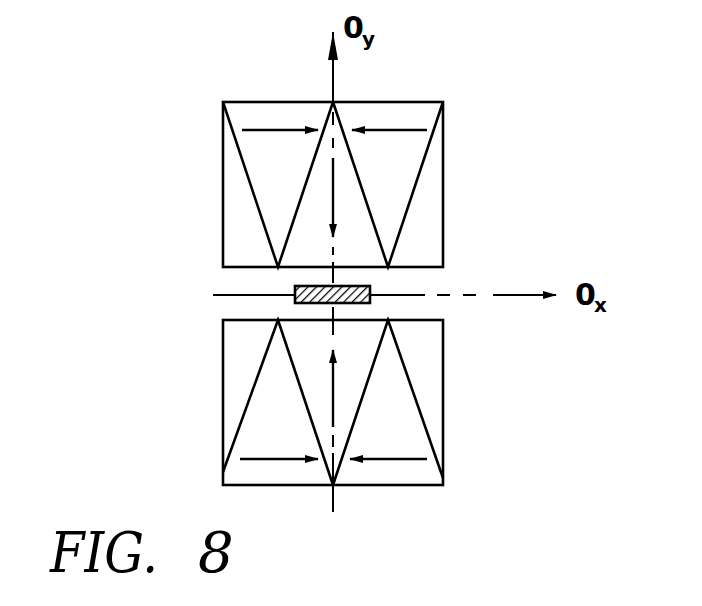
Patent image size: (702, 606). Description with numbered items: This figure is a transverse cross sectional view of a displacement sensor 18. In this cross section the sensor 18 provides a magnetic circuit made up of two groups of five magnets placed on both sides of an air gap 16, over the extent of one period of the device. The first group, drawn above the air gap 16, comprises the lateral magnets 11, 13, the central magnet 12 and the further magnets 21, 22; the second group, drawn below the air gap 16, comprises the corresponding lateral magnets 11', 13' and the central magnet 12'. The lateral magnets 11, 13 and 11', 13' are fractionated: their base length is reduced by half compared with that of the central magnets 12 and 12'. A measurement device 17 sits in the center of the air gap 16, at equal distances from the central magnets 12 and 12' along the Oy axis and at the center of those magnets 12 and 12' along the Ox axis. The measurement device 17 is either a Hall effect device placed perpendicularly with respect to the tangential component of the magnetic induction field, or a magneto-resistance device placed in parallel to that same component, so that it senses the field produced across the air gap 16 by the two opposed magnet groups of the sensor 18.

The sensor 18 is at (133, 127).
The fractionated lateral magnet 11 is at (235, 184).
The central magnet 12 is at (244, 203).
The fractionated lateral magnet 13 is at (437, 184).
The fractionated lateral magnet 11' is at (234, 402).
The central magnet 12' is at (244, 382).
The fractionated lateral magnet 13' is at (433, 402).
The air gap 16 is at (400, 313).
The measurement device 17 is at (297, 287).
The magnet 21 is at (266, 103).
The magnet 22 is at (392, 105).